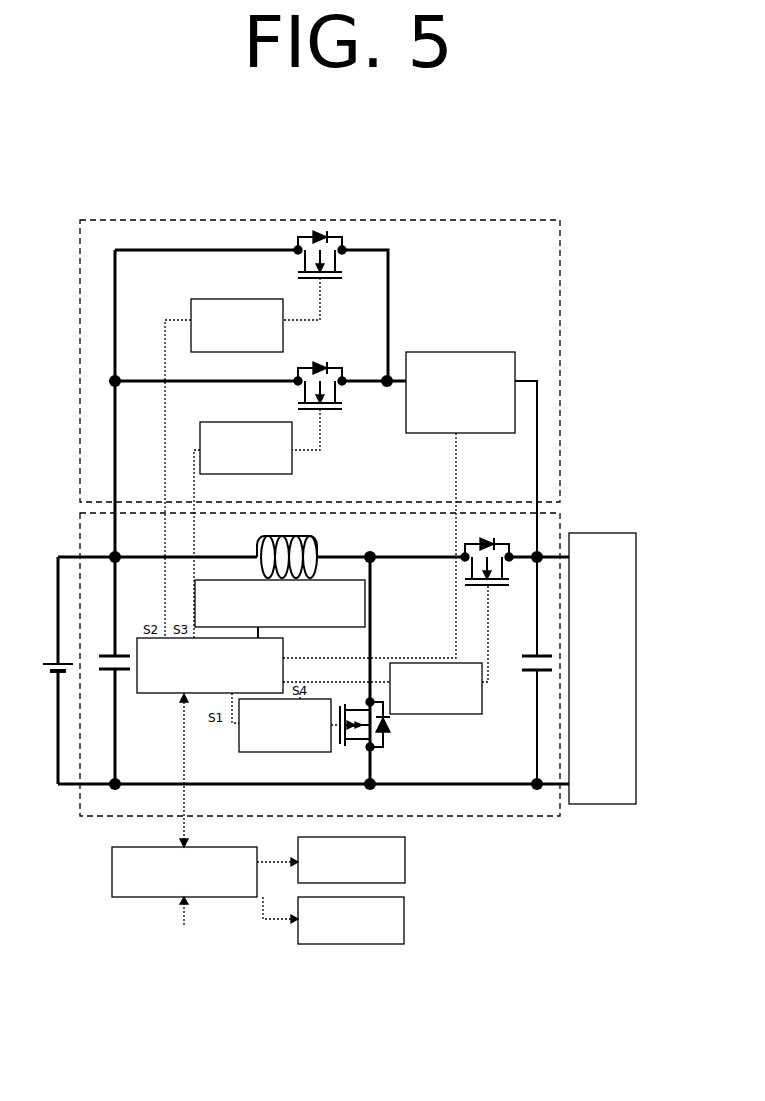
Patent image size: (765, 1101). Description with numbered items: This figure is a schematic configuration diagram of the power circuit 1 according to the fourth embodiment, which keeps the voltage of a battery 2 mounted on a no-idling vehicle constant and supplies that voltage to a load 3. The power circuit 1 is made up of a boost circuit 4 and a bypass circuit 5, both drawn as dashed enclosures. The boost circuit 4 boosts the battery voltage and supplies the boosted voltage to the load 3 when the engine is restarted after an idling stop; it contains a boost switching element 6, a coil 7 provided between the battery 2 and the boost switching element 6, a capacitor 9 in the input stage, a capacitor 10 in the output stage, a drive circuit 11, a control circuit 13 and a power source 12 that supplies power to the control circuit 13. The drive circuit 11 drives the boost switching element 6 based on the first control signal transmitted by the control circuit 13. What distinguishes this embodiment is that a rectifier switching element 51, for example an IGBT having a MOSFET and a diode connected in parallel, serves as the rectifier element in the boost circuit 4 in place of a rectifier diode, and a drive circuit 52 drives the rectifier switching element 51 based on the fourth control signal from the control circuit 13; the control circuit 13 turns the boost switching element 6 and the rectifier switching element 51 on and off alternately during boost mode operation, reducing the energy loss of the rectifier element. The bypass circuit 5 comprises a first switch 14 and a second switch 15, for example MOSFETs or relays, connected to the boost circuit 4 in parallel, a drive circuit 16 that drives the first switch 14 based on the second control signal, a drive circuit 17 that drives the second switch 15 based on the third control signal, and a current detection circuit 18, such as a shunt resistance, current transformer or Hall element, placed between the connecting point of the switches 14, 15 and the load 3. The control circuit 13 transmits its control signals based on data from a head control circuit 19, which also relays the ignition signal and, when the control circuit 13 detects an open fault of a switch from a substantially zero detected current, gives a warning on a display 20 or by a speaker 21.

The power circuit 1 is at (321, 211).
The battery 2 is at (50, 661).
The load 3 is at (600, 533).
The boost circuit 4 is at (513, 818).
The bypass circuit 5 is at (560, 363).
The boost switching element 6 is at (358, 750).
The coil 7 is at (316, 540).
The capacitor 9 is at (110, 652).
The capacitor 10 is at (525, 653).
The drive circuit 11 is at (280, 752).
The power source for the control circuit 12 is at (343, 627).
The control circuit 13 is at (283, 640).
The first switch 14 is at (338, 268).
The second switch 15 is at (338, 399).
The drive circuit 16 is at (283, 330).
The drive circuit 17 is at (253, 530).
The current detection circuit 18 is at (458, 352).
The head control circuit 19 is at (195, 822).
The display 20 is at (405, 862).
The speaker 21 is at (404, 921).
The rectifier switching element 51 is at (497, 590).
The drive circuit 52 is at (437, 714).